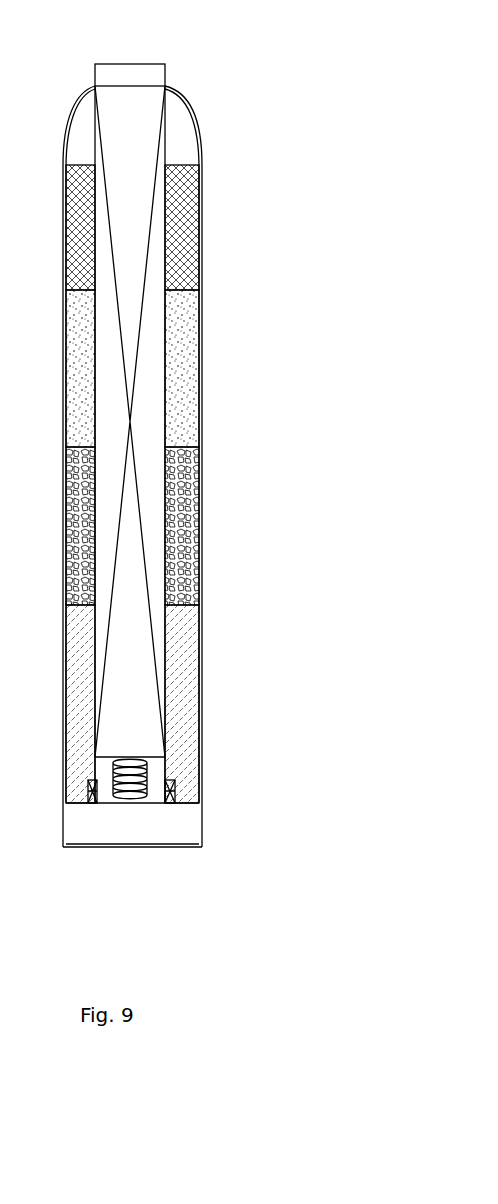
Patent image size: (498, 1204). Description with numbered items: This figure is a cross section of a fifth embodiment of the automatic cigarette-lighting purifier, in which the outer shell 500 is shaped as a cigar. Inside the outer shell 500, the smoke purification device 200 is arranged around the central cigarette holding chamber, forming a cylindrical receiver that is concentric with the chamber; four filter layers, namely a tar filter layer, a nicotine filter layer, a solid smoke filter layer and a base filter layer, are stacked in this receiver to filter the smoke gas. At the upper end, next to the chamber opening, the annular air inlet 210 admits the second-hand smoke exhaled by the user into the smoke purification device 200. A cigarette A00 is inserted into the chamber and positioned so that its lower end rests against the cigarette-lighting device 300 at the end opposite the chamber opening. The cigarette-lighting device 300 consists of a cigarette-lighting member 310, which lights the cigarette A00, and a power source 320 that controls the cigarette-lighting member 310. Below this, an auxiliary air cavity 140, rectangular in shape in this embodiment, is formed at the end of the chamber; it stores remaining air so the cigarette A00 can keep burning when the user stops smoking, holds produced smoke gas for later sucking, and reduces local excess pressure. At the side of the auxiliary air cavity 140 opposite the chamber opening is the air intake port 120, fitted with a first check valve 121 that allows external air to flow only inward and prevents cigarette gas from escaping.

The air inlet 210 is at (166, 86).
The cigarette A00 is at (138, 167).
The smoke purification device 200 is at (186, 257).
The outer shell 500 is at (200, 348).
The cigarette-lighting member 310 is at (135, 772).
The power source 320 is at (173, 792).
The cigarette-lighting device 300 is at (218, 772).
The auxiliary air cavity 140 is at (156, 830).
The air intake port 120 is at (120, 847).
The first check valve 121 is at (150, 849).